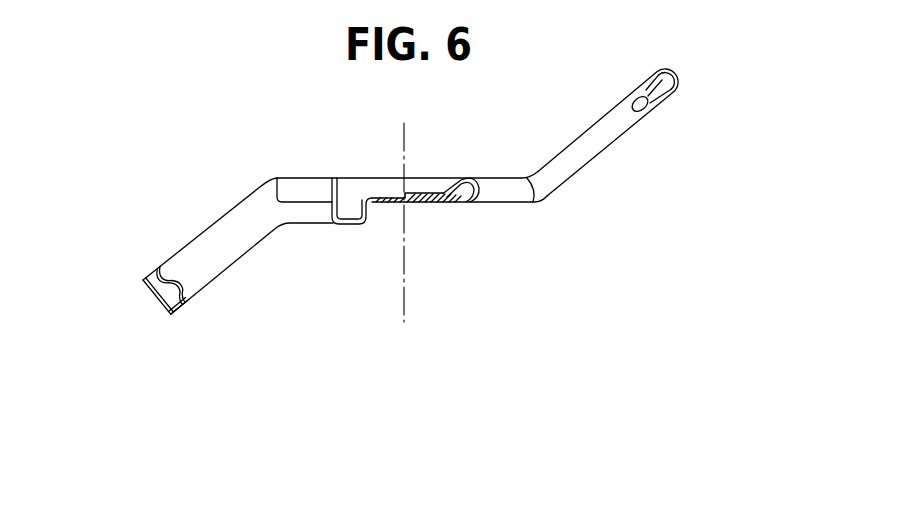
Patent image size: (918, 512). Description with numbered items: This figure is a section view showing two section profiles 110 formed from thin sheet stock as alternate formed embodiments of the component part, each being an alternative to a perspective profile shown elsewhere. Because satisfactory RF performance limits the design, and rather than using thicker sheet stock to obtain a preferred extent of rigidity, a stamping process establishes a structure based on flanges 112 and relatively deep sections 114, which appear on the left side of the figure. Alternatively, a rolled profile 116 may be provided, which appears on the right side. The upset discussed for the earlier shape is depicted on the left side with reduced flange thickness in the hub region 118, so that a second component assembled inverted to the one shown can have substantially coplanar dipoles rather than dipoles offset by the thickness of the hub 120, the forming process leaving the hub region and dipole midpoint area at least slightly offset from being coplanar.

The section profiles 110 is at (110, 190).
The flanges 112 is at (365, 212).
The relatively deep sections 114 is at (171, 314).
The rolled profile 116 is at (673, 106).
The hub region 118 is at (403, 170).
The hub 120 is at (277, 202).